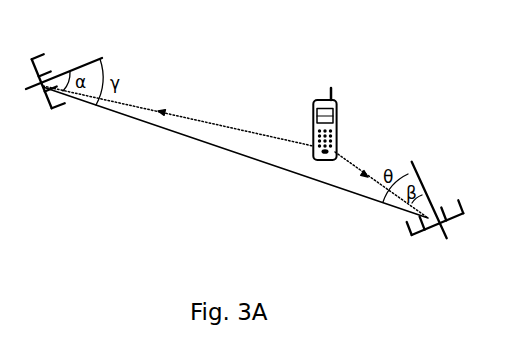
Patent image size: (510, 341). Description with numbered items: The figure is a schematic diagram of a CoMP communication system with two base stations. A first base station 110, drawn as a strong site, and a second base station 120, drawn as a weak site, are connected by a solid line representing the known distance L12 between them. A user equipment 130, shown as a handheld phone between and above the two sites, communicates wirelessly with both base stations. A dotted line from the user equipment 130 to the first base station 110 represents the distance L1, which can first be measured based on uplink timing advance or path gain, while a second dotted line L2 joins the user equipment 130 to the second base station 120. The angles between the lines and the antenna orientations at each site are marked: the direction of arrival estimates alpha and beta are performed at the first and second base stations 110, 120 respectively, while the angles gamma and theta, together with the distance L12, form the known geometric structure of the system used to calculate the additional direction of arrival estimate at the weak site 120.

The first base station 110 is at (66, 60).
The second base station 120 is at (429, 223).
The user equipment 130 is at (337, 125).
The distance between the user equipment and site 110 L1 is at (233, 128).
The line L2 from UE to site 120 L2 is at (357, 170).
The distance between the sites L12 is at (225, 152).